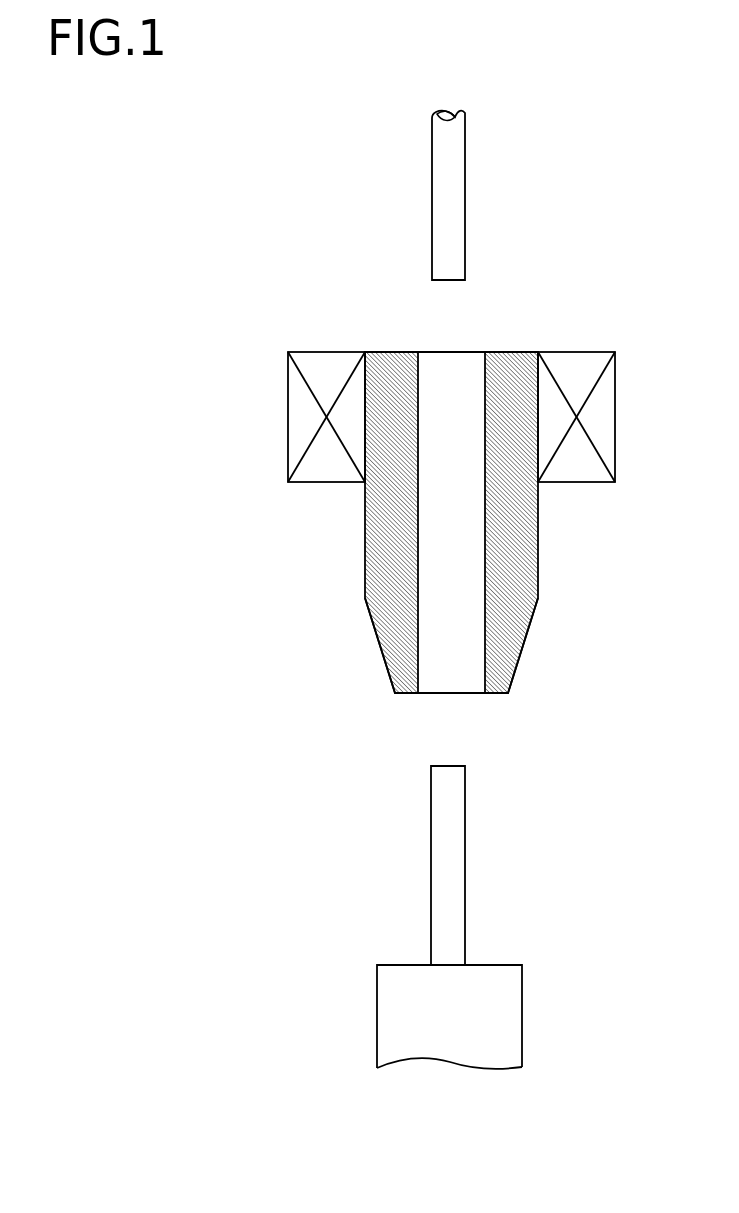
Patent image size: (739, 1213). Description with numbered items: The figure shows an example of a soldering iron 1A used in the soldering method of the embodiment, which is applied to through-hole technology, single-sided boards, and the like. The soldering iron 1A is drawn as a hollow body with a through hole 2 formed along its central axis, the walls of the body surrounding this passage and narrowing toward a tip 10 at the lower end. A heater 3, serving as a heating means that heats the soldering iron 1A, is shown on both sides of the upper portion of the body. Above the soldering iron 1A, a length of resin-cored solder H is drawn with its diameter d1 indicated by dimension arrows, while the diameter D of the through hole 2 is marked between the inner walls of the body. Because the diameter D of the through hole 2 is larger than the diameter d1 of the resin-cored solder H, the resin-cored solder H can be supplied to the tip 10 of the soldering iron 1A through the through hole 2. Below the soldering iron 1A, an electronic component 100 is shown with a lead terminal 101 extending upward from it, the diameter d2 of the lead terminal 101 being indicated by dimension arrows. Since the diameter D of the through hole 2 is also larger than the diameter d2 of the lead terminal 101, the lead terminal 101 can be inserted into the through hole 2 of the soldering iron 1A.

The resin-cored solder H is at (465, 152).
The diameter of the resin-cored solder d1 is at (382, 235).
The soldering iron 1A is at (491, 522).
The through hole 2 is at (485, 516).
The heater 3 is at (615, 413).
The tip 10 is at (513, 658).
The diameter of the through hole D is at (484, 570).
The lead terminal 101 is at (465, 910).
The diameter of the lead terminal d2 is at (382, 825).
The electronic component 100 is at (523, 1020).